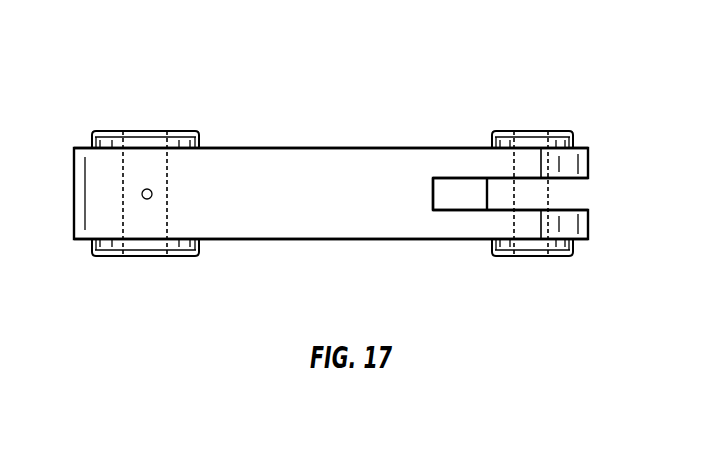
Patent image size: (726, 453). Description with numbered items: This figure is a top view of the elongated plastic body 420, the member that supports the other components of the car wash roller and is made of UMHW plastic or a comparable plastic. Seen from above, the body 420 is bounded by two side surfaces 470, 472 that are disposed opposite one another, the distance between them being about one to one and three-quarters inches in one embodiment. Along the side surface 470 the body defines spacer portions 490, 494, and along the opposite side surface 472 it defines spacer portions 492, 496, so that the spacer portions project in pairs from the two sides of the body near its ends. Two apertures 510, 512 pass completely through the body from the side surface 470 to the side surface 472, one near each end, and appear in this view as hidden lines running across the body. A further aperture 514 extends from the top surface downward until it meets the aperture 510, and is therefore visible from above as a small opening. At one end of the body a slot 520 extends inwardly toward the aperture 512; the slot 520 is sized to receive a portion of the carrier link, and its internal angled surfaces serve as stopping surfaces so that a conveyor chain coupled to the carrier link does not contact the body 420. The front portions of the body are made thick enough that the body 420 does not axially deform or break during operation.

The elongated plastic body 420 is at (363, 83).
The side surface 470 is at (362, 241).
The side surface 472 is at (377, 147).
The spacer portion 490 is at (167, 258).
The spacer portion 492 is at (201, 143).
The spacer portion 494 is at (575, 243).
The spacer portion 496 is at (573, 138).
The aperture 510 is at (127, 247).
The aperture 512 is at (547, 247).
The aperture 514 is at (152, 196).
The slot 520 is at (579, 181).